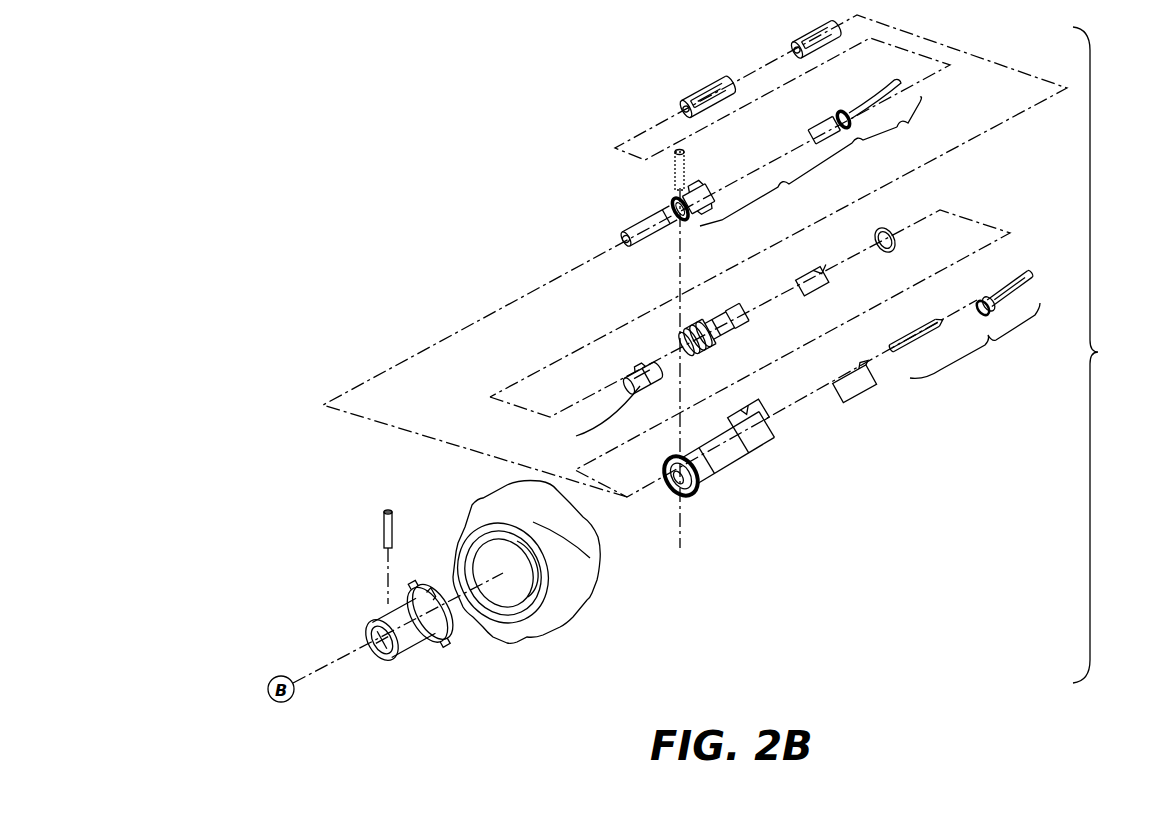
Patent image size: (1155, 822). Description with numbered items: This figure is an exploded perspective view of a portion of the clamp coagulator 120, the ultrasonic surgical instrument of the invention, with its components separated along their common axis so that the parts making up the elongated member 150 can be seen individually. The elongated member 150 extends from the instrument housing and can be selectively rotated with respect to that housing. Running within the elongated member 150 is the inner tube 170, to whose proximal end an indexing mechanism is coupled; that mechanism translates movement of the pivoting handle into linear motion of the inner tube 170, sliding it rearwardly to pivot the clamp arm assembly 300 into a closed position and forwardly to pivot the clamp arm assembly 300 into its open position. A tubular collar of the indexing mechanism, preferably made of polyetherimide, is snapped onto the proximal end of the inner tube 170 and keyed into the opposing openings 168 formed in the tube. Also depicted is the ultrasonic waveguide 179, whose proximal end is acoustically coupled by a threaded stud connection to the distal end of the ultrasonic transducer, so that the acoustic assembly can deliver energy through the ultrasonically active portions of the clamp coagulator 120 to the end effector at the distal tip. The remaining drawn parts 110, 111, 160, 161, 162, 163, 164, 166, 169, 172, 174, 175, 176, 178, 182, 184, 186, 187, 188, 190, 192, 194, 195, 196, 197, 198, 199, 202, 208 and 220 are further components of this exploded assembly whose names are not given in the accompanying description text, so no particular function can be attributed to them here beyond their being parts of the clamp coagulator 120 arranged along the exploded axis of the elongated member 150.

The pin 110 is at (708, 96).
The pin tip 111 is at (738, 80).
The clamp coagulator 120 is at (403, 157).
The elongated member 150 is at (1109, 355).
The connector body 160 is at (772, 433).
The ring 161 is at (672, 466).
The connector sleeve 162 is at (711, 470).
The pin 163 is at (383, 527).
The sleeve 164 is at (862, 392).
The end ring 166 is at (669, 497).
The opposing openings 168 is at (585, 418).
The tab 169 is at (755, 452).
The inner tube 170 is at (727, 316).
The clip slot 172 is at (652, 388).
The sleeve 174 is at (836, 278).
The clip 175 is at (622, 379).
The connector band 176 is at (718, 338).
The ring 178 is at (672, 338).
The ultrasonic waveguide 179 is at (700, 194).
The connector 182 is at (643, 253).
The cable 184 is at (798, 176).
The wire end 186 is at (890, 115).
The crimp connector 187 is at (827, 118).
The ring 188 is at (676, 204).
The housing assembly 190 is at (448, 514).
The nut body 192 is at (565, 587).
The plug 194 is at (418, 657).
The axis 195 is at (690, 537).
The plug face 196 is at (375, 653).
The flange 197 is at (468, 498).
The bore 198 is at (523, 633).
The plug ring 199 is at (385, 603).
The pin 202 is at (1001, 290).
The pin 208 is at (895, 342).
The O-ring 220 is at (897, 240).
The clamp arm assembly 300 is at (975, 340).